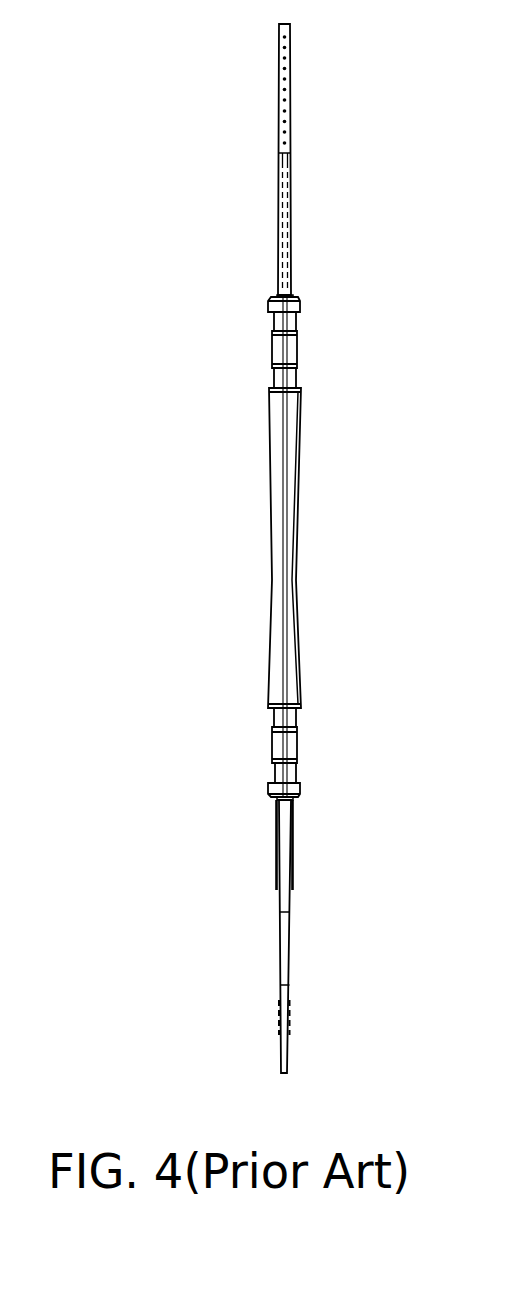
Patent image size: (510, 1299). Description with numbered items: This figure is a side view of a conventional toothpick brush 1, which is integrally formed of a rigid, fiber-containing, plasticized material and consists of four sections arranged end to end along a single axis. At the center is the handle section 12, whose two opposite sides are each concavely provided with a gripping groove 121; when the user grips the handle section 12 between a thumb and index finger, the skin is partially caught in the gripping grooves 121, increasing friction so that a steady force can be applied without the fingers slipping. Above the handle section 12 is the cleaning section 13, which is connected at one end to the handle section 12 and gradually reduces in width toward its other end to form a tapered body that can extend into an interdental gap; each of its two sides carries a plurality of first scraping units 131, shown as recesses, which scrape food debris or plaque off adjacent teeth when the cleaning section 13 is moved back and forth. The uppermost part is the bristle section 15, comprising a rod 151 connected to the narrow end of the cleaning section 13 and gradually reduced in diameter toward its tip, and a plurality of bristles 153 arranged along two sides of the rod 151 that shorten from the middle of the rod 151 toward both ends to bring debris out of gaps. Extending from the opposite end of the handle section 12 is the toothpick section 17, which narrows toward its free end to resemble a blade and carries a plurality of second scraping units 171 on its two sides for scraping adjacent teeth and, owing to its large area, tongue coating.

The toothpick brush 1 is at (72, 189).
The handle section 12 is at (298, 411).
The gripping groove 121 is at (293, 552).
The cleaning section 13 is at (295, 221).
The first scraping units 131 is at (282, 172).
The bristle section 15 is at (196, 5).
The rod 151 is at (281, 25).
The bristles 153 is at (281, 62).
The toothpick section 17 is at (295, 829).
The second scraping units 171 is at (288, 1020).